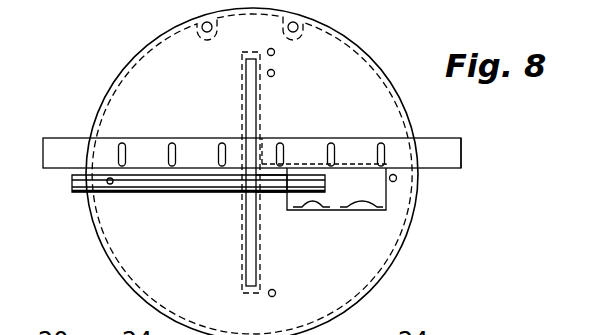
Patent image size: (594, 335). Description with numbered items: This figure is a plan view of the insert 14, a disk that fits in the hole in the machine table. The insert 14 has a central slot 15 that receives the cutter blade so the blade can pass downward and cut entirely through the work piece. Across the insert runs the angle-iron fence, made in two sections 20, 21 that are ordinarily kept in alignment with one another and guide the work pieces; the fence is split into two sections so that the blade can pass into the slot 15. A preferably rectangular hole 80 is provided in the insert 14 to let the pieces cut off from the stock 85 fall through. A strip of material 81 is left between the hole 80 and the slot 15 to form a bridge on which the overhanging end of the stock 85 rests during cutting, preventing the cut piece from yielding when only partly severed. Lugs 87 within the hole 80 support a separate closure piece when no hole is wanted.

The insert 14 is at (401, 248).
The slot 15 is at (258, 250).
The fence section 20 is at (64, 142).
The fence section 21 is at (453, 153).
The hole 80 is at (386, 190).
The strip of material 81 is at (271, 199).
The stock 85 is at (134, 195).
The lugs 87 is at (327, 209).